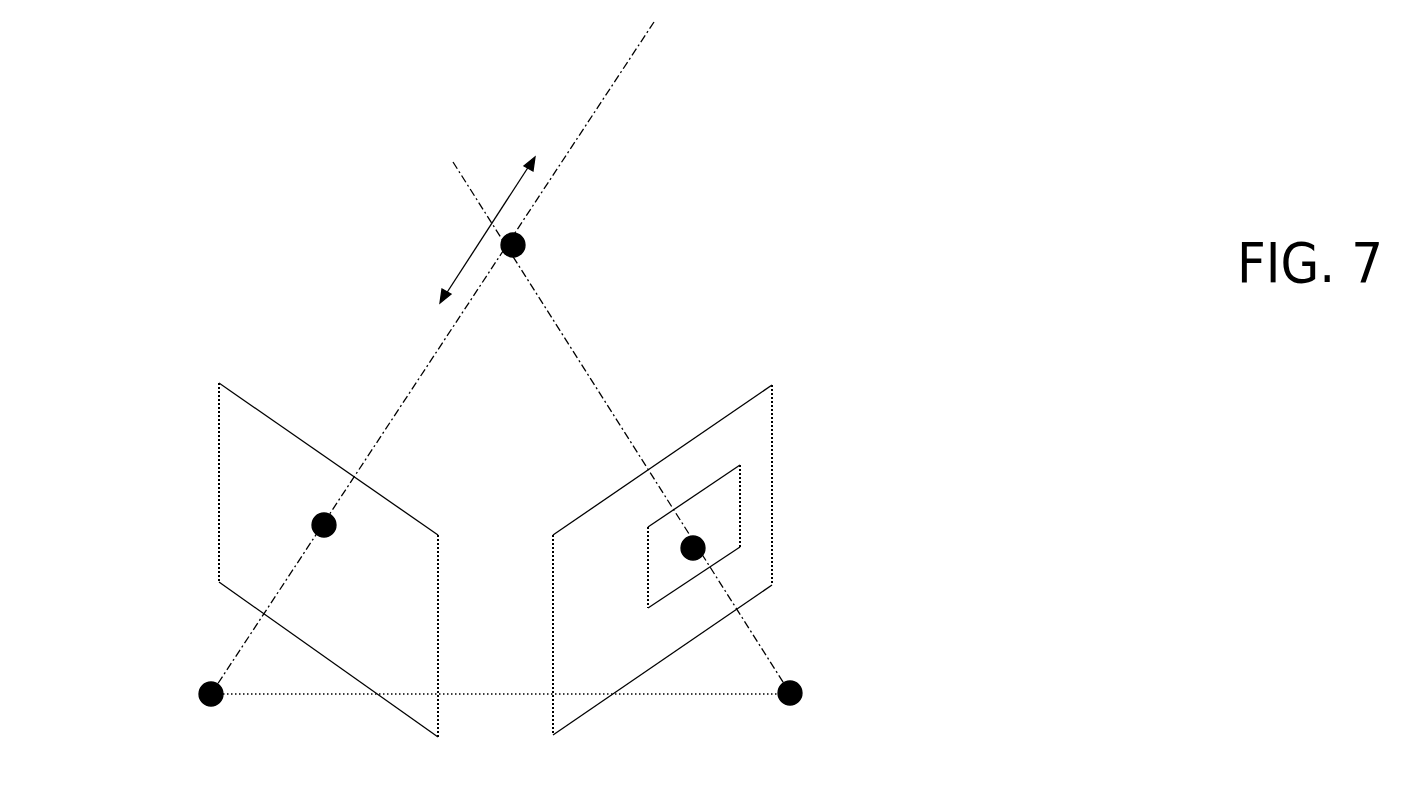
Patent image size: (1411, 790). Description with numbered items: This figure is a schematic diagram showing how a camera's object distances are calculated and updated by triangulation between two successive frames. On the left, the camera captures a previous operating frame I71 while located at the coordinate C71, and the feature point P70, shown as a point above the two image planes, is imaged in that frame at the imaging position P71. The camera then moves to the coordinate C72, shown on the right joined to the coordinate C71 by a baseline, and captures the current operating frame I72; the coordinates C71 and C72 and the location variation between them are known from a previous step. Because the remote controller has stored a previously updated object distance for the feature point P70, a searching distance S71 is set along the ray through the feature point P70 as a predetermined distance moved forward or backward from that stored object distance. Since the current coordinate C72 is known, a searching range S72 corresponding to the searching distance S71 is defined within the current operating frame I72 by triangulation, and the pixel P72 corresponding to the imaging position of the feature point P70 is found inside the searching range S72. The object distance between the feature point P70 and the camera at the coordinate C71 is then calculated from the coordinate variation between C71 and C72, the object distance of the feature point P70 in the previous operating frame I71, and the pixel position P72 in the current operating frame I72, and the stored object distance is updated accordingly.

The searching distance S71 is at (496, 213).
The feature point P70 is at (543, 245).
The previous operating frame I71 is at (305, 554).
The imaging position of the feature point in the previous operating frame P71 is at (346, 547).
The coordinate of the camera for the previous operating frame C71 is at (189, 695).
The current operating frame I72 is at (689, 540).
The searching range S72 is at (709, 522).
The pixel corresponding to the imaging position of the feature point in the current P72 is at (704, 537).
The coordinate of the camera for the current operating frame C72 is at (824, 701).